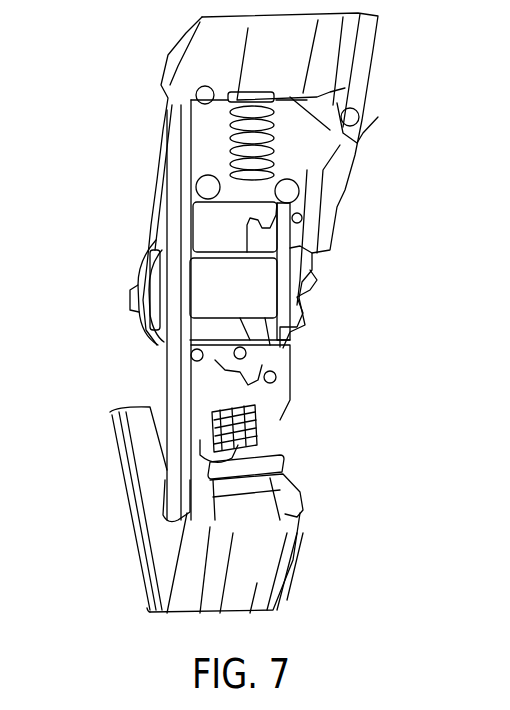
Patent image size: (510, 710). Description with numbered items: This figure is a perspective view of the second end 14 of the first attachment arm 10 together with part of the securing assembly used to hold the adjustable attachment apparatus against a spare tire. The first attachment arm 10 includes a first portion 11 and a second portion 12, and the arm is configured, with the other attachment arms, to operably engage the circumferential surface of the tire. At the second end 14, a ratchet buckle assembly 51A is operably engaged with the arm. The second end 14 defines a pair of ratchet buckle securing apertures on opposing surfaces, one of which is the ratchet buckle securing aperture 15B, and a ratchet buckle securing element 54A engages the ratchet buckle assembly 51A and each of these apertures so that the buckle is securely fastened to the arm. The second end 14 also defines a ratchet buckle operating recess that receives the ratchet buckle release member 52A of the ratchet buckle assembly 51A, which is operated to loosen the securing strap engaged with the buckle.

The first attachment arm 10 is at (303, 644).
The first portion 11 is at (94, 504).
The second portion 12 is at (321, 579).
The second end 14 is at (290, 563).
The ratchet buckle securing aperture 15B is at (331, 470).
The ratchet buckle assembly 51A is at (300, 266).
The ratchet buckle release member 52A is at (235, 432).
The ratchet buckle securing element 54A is at (257, 487).